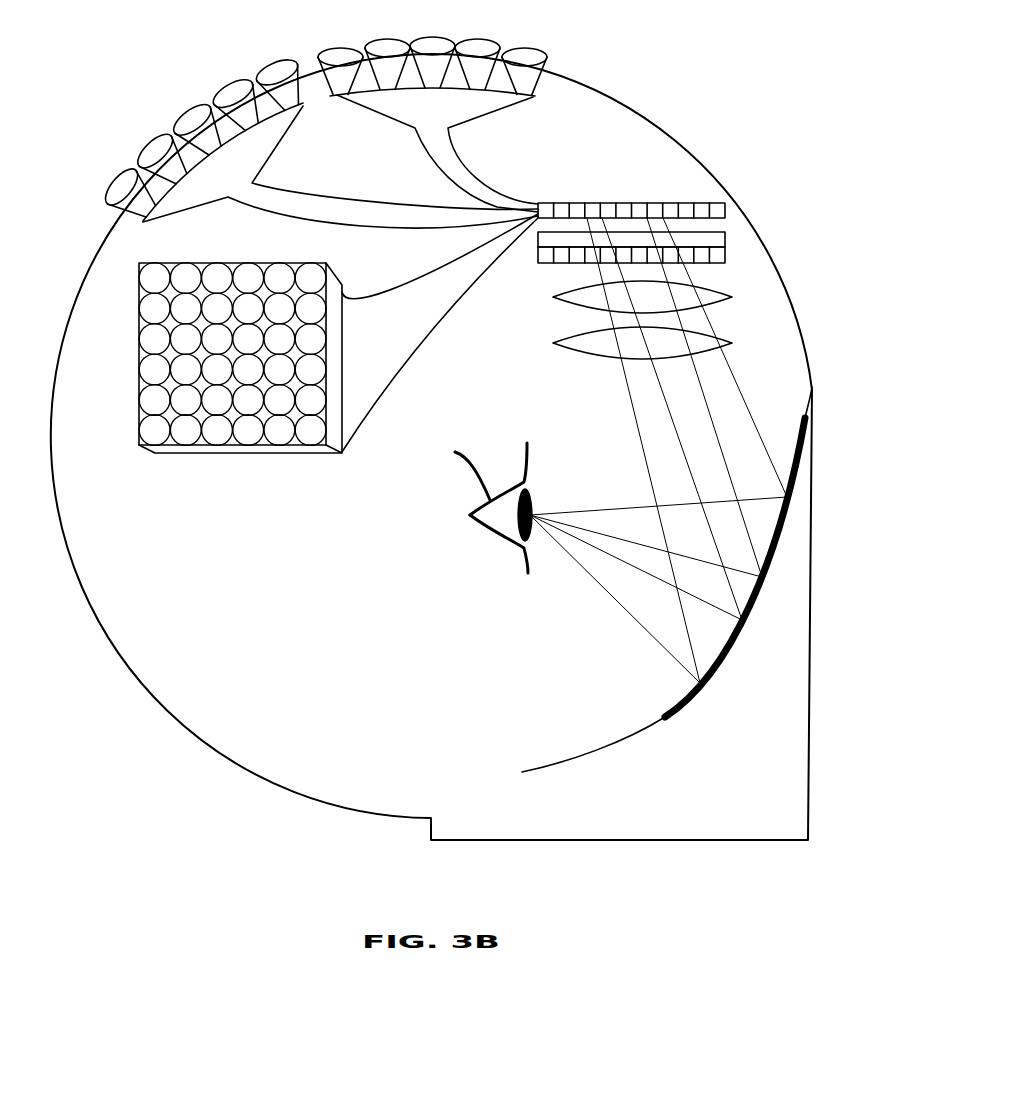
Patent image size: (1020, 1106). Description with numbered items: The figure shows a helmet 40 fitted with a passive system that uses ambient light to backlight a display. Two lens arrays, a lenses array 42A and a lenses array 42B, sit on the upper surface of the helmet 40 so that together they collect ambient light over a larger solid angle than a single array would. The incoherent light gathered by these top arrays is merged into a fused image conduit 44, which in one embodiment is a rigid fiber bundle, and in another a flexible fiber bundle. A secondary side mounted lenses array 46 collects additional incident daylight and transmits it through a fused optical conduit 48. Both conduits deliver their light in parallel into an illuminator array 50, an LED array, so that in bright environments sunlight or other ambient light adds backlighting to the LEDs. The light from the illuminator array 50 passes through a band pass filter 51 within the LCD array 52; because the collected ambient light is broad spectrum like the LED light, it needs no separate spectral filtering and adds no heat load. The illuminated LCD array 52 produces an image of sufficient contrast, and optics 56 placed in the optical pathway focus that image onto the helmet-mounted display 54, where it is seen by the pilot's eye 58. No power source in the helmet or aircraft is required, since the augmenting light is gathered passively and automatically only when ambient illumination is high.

The helmet 40 is at (431, 447).
The lenses array 42A is at (432, 53).
The lenses array 42B is at (175, 138).
The fused image conduit 44 is at (340, 161).
The secondary side mounted array 46 is at (240, 394).
The fused optical conduit 48 is at (440, 333).
The illuminator array 50 is at (631, 188).
The band pass filter 51 is at (728, 225).
The LCD array 52 is at (727, 262).
The helmet-mounted display 54 is at (697, 495).
The optics 56 is at (696, 320).
The pilot's eye 58 is at (595, 552).